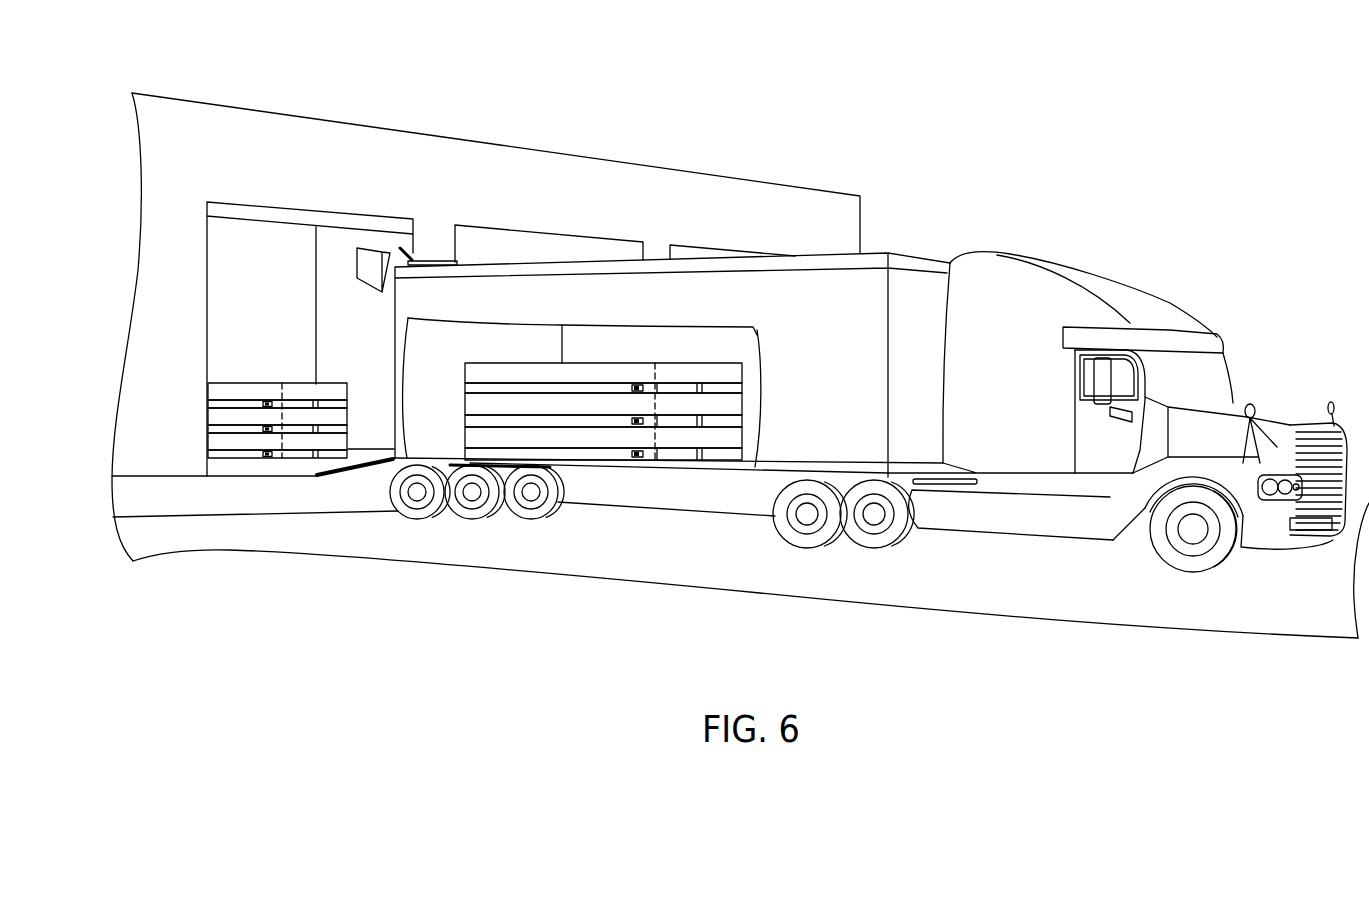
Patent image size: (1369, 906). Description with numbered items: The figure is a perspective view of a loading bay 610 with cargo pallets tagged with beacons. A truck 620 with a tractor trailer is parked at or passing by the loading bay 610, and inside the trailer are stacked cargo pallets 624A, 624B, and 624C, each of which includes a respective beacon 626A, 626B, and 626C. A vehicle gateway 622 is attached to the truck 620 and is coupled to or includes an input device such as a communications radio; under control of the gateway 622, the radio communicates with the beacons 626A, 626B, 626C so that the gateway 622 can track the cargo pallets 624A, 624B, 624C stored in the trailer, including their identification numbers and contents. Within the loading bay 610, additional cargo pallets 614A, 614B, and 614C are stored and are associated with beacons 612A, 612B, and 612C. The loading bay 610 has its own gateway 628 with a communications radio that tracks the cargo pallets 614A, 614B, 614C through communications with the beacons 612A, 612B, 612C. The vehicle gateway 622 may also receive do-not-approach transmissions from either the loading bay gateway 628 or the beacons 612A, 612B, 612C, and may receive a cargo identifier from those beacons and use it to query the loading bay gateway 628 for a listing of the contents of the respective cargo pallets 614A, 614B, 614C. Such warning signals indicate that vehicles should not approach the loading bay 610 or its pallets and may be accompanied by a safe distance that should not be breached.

The loading bay 610 is at (307, 208).
The beacon 612A is at (266, 402).
The beacon 612B is at (266, 430).
The beacon 612C is at (266, 457).
The cargo pallet 614A is at (315, 389).
The cargo pallet 614B is at (302, 417).
The cargo pallet 614C is at (305, 445).
The truck 620 is at (1072, 266).
The vehicle gateway 622 is at (414, 259).
The cargo pallet 624A is at (477, 373).
The cargo pallet 624B is at (475, 404).
The cargo pallet 624C is at (475, 437).
The beacon 626A is at (643, 387).
The beacon 626B is at (640, 425).
The beacon 626C is at (640, 460).
The loading bay gateway 628 is at (367, 248).